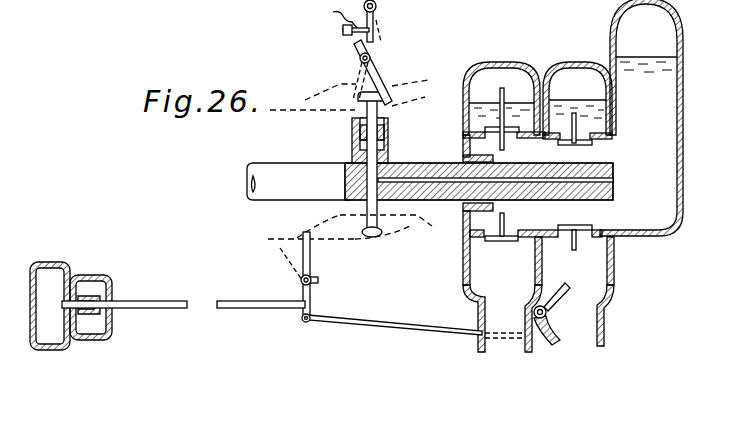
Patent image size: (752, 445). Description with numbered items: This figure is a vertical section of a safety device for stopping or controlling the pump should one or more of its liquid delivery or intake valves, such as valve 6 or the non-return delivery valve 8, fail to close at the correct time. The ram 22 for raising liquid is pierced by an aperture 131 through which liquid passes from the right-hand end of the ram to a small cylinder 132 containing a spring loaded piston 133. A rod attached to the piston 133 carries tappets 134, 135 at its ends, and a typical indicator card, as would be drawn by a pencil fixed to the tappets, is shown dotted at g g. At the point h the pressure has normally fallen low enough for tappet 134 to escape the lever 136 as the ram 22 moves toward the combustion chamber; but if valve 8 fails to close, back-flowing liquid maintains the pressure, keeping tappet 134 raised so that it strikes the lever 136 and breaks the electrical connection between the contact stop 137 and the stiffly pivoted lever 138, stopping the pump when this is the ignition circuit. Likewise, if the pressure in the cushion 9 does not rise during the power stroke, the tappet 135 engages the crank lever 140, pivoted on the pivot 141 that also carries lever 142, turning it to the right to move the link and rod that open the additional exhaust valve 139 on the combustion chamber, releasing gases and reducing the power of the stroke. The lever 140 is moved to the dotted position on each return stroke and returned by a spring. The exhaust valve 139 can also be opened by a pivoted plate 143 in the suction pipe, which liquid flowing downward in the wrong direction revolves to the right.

The valve 6 is at (578, 118).
The non-return delivery valve 8 is at (504, 106).
The cushion 9 is at (641, 118).
The ram 22 is at (434, 157).
The aperture 131 is at (613, 180).
The small cylinder 132 is at (367, 155).
The spring loaded piston 133 is at (352, 138).
The tappet 134 is at (386, 100).
The tappet 135 is at (376, 237).
The lever 136 is at (378, 72).
The contact stop 137 is at (352, 31).
The stiffly pivoted lever 138 is at (377, 14).
The exhaust valve 139 is at (56, 300).
The crank lever 140 is at (312, 258).
The pivot 141 is at (300, 281).
The lever 142 is at (312, 298).
The pivoted plate 143 is at (562, 310).
The indicator card g is at (355, 162).
The point h is at (305, 233).